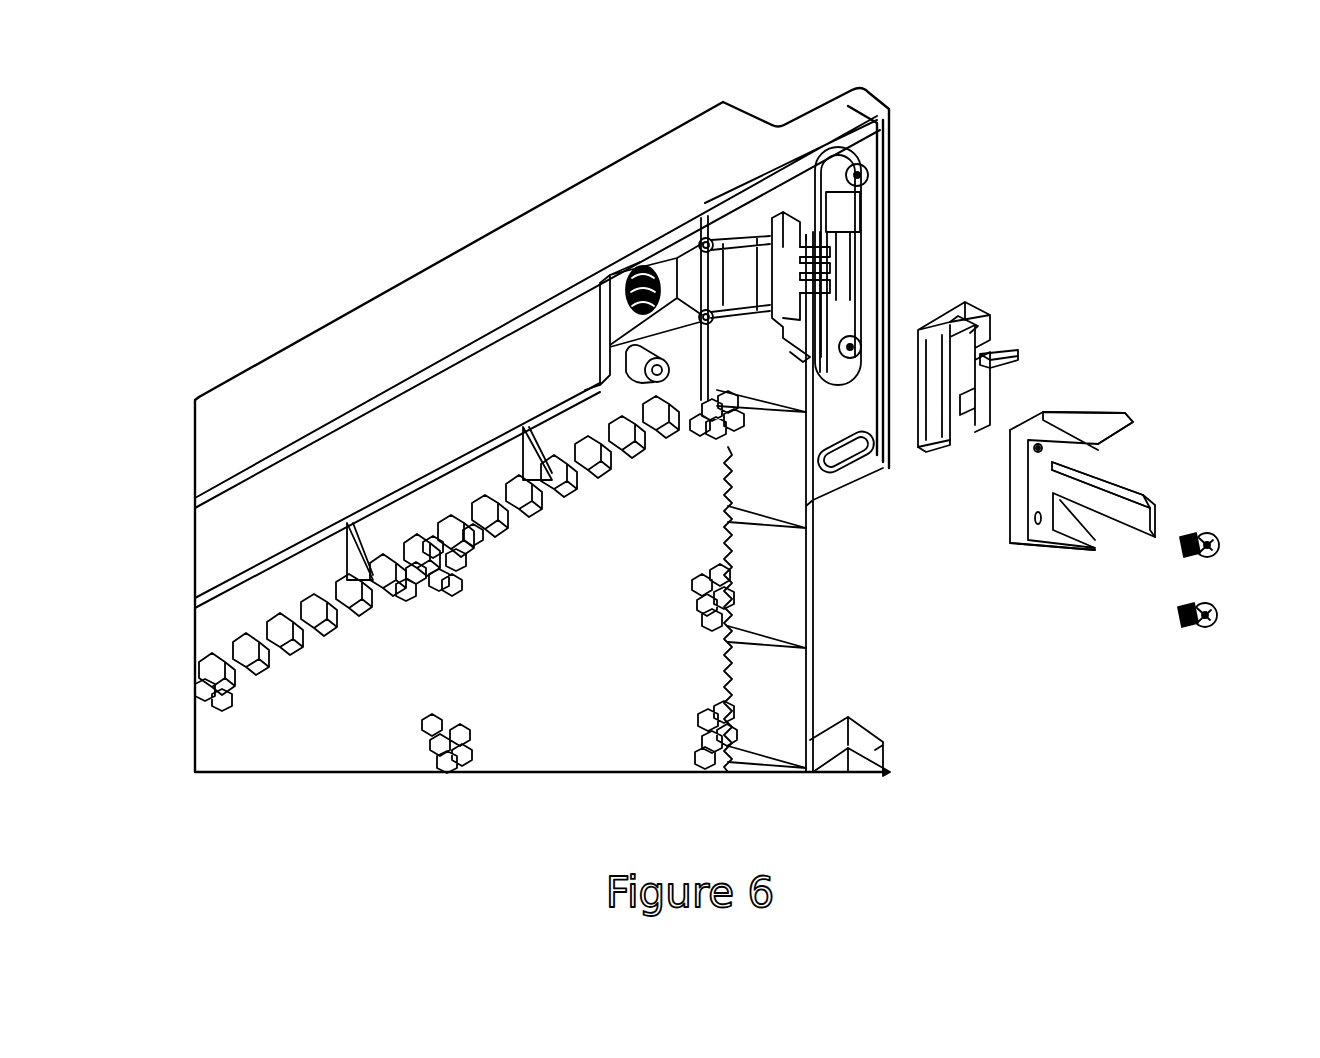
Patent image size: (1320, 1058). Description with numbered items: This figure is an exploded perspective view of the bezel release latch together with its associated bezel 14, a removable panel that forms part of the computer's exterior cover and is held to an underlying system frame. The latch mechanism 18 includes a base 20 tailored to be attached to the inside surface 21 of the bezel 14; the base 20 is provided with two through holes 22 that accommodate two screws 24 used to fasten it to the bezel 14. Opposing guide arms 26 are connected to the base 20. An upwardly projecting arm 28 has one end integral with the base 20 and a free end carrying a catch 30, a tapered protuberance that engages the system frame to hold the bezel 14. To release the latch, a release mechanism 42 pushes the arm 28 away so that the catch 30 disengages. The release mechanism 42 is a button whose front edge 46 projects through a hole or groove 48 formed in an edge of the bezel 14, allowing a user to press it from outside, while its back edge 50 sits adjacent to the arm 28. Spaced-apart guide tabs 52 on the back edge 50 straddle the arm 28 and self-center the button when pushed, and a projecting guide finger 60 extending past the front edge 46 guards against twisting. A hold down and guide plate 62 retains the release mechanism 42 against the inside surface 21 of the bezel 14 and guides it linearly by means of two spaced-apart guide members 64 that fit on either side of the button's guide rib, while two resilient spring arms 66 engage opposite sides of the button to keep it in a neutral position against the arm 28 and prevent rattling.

The bezel 14 is at (603, 162).
The latch mechanism 18 is at (1080, 558).
The base 20 is at (1091, 497).
The inside surface 21 is at (469, 582).
The through holes 22 is at (1036, 450).
The screws 24 is at (1218, 537).
The guide arms 26 is at (1073, 423).
The arm 28 is at (1090, 480).
The catch 30 is at (1150, 503).
The release mechanism 42 is at (993, 352).
The front edge 46 is at (980, 305).
The hole or groove 48 is at (788, 240).
The back edge 50 is at (922, 395).
The guide tabs 52 is at (938, 438).
The projecting guide finger 60 is at (1012, 360).
The hold down and guide plate 62 is at (858, 208).
The guide members 64 is at (813, 250).
The resilient spring arms 66 is at (858, 177).